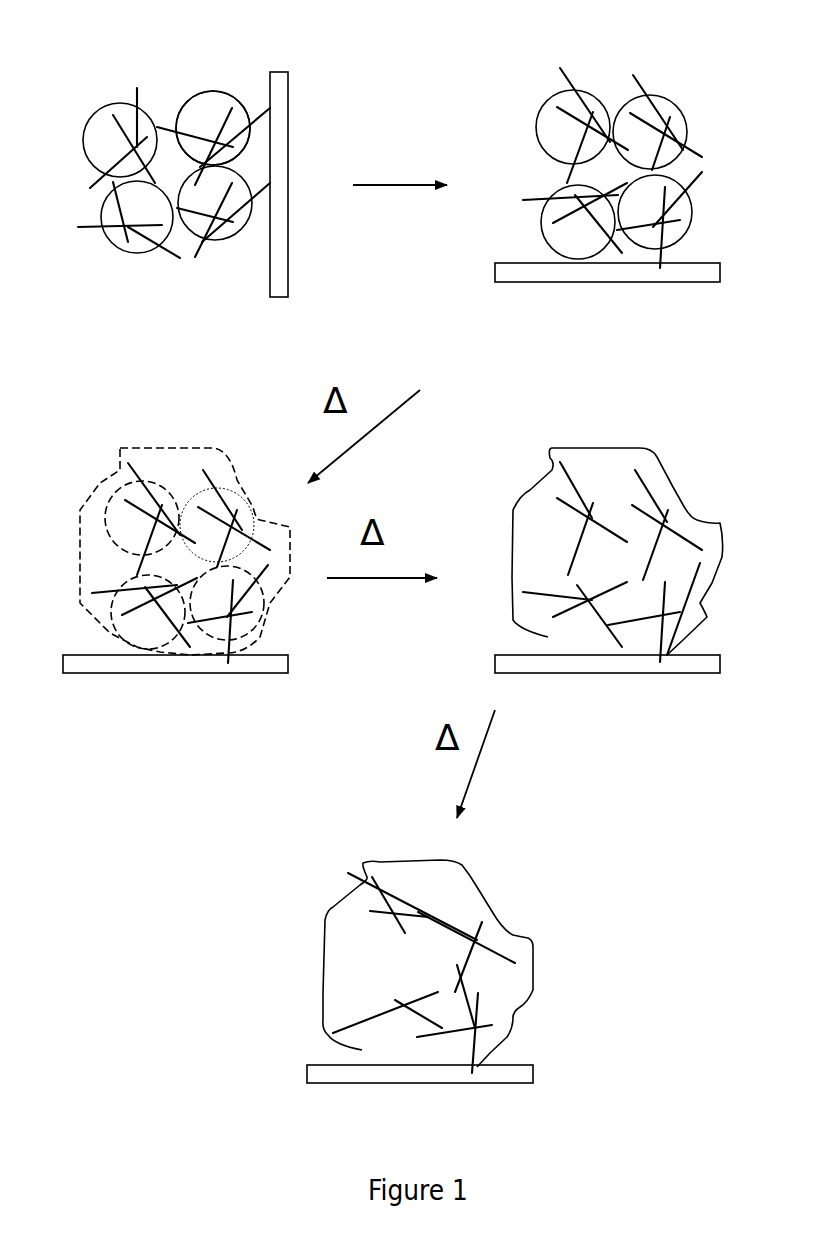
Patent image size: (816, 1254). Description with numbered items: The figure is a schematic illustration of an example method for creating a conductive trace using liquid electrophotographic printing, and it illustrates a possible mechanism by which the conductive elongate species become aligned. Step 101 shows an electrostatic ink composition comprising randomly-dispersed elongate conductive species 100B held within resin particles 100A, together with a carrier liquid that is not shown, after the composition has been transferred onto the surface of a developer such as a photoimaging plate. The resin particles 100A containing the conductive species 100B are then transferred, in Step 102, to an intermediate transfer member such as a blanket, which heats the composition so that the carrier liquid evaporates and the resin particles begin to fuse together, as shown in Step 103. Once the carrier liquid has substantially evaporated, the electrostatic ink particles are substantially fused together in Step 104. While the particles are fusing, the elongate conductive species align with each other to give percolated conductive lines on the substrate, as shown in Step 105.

The resin particles 100A is at (213, 108).
The elongate conductive species 100B is at (137, 88).
The step of electrostatic ink composition on developer 101 is at (183, 201).
The step of transfer to intermediate transfer member 102 is at (607, 200).
The step of heating and fusing 103 is at (176, 587).
The step of substantially fused ink particles 104 is at (609, 586).
The step of aligned conductive species on substrate 105 is at (420, 1005).